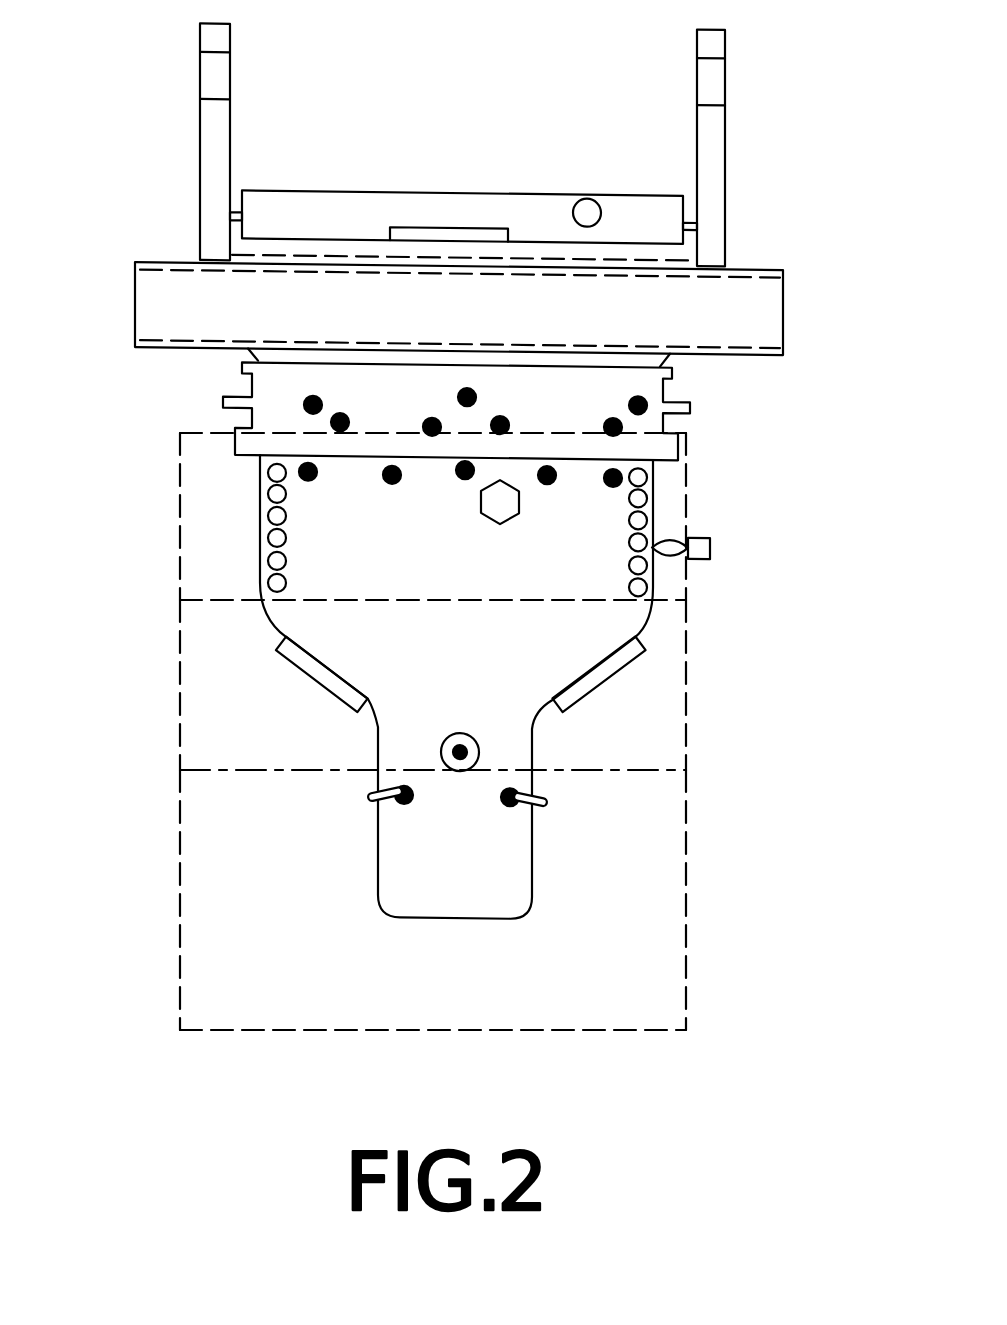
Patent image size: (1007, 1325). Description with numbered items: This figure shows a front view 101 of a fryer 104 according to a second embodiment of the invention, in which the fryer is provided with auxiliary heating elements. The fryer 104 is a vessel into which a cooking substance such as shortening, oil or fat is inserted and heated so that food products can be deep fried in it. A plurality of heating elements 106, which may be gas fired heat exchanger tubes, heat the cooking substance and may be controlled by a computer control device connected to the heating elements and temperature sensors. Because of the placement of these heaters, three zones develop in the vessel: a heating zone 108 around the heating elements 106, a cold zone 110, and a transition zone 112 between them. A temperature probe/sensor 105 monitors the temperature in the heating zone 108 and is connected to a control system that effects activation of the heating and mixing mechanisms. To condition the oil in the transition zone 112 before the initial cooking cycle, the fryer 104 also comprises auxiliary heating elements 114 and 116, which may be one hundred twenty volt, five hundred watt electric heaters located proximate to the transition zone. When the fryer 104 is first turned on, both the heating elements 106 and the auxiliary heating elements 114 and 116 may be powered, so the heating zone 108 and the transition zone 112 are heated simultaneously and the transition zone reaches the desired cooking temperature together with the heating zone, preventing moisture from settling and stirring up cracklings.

The front view of fryer 101 is at (848, 408).
The fryer 104 is at (262, 476).
The temperature probe/sensor 105 is at (733, 530).
The heating elements 106 is at (642, 503).
The heating zone 108 is at (177, 566).
The cold zone 110 is at (688, 898).
The transition zone 112 is at (688, 705).
The auxiliary heating element 114 is at (320, 688).
The auxiliary heating element 116 is at (622, 667).